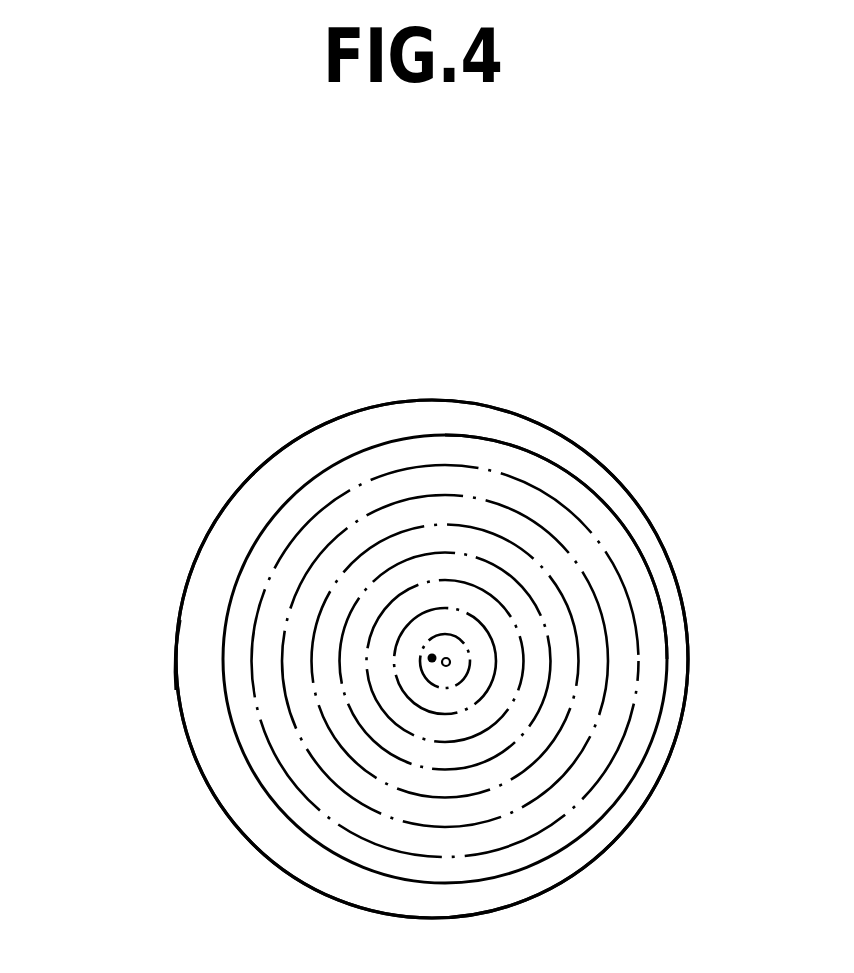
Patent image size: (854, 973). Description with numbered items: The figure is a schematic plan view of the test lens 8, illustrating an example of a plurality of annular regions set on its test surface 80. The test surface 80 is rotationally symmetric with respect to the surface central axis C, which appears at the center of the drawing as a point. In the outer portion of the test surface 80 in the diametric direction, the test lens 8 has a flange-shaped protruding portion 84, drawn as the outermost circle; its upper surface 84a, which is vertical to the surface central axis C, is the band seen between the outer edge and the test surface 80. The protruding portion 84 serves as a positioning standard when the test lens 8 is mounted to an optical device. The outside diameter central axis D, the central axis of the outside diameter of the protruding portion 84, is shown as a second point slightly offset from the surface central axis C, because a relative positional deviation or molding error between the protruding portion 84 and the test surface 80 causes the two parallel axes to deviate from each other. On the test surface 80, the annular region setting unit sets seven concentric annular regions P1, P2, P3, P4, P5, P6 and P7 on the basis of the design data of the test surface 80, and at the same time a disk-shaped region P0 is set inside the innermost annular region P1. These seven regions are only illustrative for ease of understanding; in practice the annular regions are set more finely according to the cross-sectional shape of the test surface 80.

The test lens 8 is at (630, 412).
The test surface 80 is at (381, 430).
The protruding portion 84 is at (177, 607).
The upper surface 84a is at (197, 688).
The disk-shaped region P0 is at (440, 637).
The annular region P1 is at (469, 631).
The annular region P2 is at (503, 627).
The annular region P3 is at (532, 633).
The annular region P4 is at (560, 636).
The annular region P5 is at (590, 650).
The annular region P6 is at (620, 708).
The annular region P7 is at (617, 775).
The outside diameter central axis D is at (430, 660).
The surface central axis C is at (449, 666).